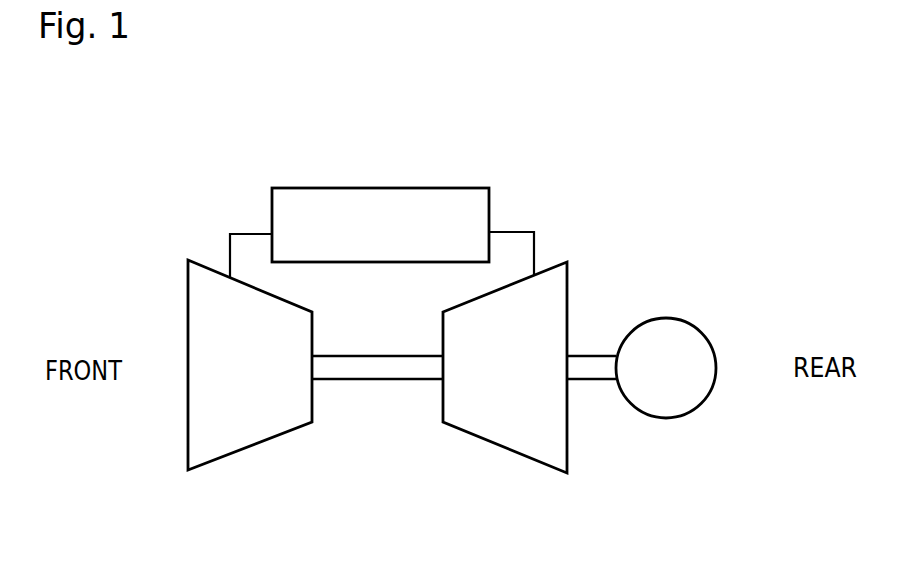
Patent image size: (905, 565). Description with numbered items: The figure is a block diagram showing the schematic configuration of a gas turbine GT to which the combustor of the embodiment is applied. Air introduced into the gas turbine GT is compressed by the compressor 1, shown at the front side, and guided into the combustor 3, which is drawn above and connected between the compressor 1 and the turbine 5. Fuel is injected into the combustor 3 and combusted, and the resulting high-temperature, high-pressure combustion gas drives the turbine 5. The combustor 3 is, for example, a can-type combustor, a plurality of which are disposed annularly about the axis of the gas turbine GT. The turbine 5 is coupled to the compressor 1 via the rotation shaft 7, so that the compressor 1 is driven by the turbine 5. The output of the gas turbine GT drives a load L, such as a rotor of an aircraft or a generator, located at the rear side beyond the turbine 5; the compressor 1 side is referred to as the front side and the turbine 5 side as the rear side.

The gas turbine GT is at (214, 166).
The compressor 1 is at (187, 468).
The combustor 3 is at (489, 198).
The turbine 5 is at (567, 303).
The rotation shaft 7 is at (372, 381).
The load L is at (700, 333).